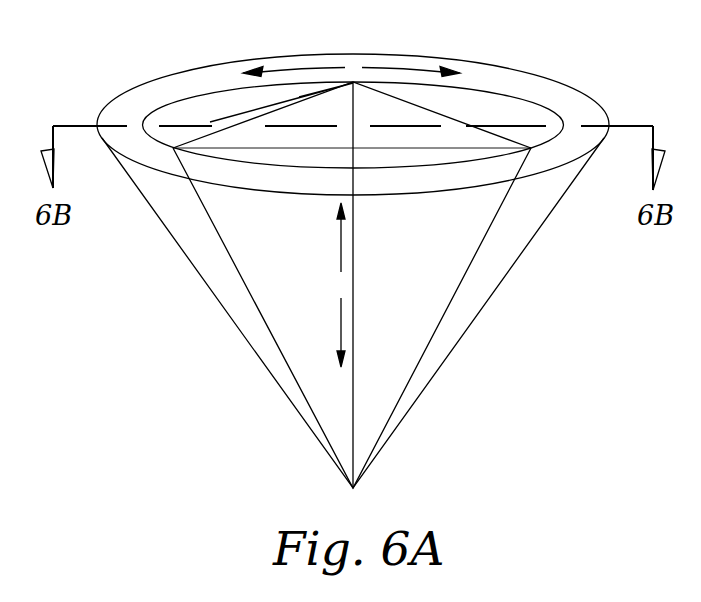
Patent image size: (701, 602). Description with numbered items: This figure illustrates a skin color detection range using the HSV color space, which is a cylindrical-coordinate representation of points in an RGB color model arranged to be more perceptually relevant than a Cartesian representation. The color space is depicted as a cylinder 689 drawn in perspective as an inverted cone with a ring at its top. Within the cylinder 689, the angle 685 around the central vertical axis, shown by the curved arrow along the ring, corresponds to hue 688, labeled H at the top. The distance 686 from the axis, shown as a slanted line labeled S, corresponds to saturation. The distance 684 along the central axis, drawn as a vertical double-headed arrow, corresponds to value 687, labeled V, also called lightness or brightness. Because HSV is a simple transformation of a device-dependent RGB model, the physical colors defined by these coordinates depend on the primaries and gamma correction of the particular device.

The distance along the axis 684 is at (339, 243).
The angle around the central vertical axis 685 is at (290, 70).
The distance from the axis 686 is at (237, 116).
The value 687 is at (333, 283).
The hue 688 is at (353, 55).
The cylinder 689 is at (521, 72).